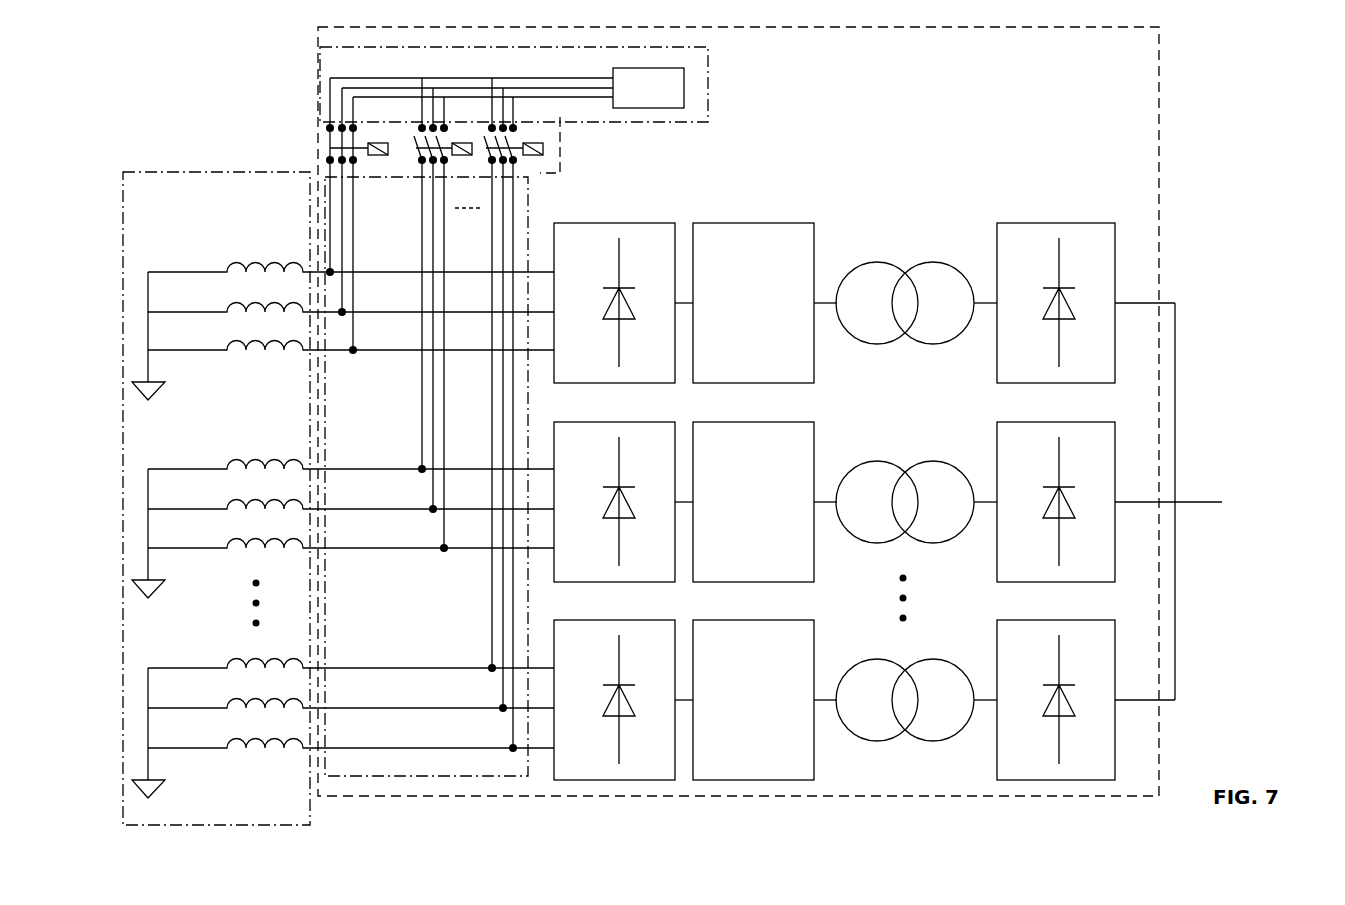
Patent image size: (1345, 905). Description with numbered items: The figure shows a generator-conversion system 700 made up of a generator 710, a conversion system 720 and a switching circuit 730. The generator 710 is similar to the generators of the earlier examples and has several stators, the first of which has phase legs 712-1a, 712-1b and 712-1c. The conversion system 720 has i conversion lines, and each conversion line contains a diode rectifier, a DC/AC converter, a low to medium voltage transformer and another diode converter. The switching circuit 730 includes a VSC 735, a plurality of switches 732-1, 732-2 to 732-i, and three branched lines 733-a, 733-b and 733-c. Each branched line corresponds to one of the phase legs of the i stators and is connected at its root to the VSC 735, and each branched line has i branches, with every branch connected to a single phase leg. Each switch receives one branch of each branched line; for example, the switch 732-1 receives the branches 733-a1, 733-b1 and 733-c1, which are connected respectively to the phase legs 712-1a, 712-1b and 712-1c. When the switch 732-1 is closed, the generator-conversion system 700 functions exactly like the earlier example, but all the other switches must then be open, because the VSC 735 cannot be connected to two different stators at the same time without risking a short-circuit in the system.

The generator-conversion system 700 is at (720, 426).
The generator 710 is at (338, 472).
The phase leg 712-1a is at (208, 271).
The phase leg 712-1b is at (176, 311).
The phase leg 712-1c is at (200, 350).
The conversion system 720 is at (773, 411).
The switching circuit 730 is at (551, 87).
The switch 732-1 is at (370, 144).
The switch 732-2 is at (452, 144).
The switch 732-i is at (524, 145).
The branched line 733-a is at (500, 77).
The branched line 733-b is at (536, 87).
The branched line 733-c is at (566, 96).
The branch 733-a1 is at (328, 79).
The branch 733-b1 is at (340, 89).
The branch 733-c1 is at (351, 98).
The VSC 735 is at (686, 73).